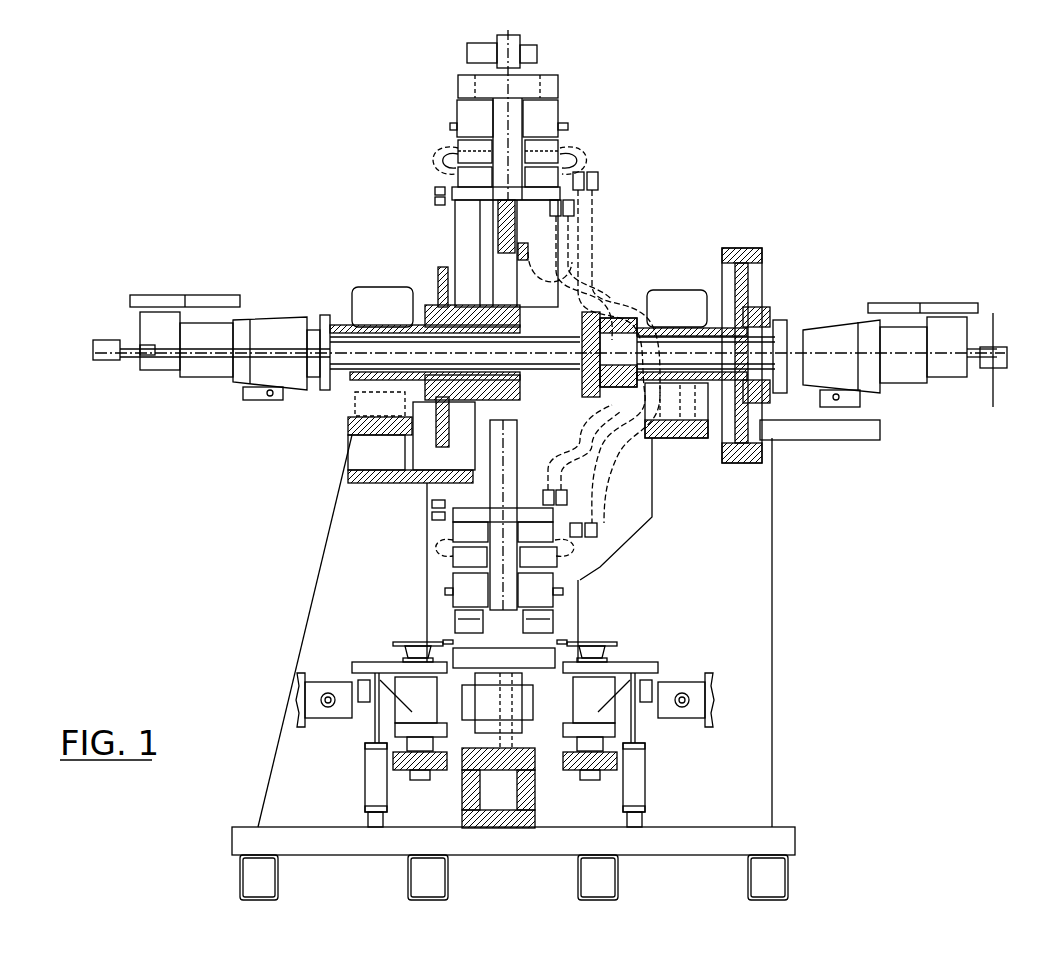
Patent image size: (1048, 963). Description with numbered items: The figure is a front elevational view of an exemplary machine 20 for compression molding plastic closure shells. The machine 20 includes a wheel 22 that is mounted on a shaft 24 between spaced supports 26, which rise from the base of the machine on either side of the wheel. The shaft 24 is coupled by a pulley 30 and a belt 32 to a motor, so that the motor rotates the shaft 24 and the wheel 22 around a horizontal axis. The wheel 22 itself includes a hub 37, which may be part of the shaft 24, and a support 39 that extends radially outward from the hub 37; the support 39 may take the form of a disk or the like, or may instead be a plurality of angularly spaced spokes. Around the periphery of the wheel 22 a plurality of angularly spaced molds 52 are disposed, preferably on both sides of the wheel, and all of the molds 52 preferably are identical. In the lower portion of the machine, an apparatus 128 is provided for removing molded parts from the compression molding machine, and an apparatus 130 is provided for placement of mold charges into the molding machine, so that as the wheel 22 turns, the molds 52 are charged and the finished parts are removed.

The machine 20 is at (698, 180).
The wheel 22 is at (582, 124).
The shaft 24 is at (378, 380).
The supports 26 is at (335, 570).
The pulley 30 is at (766, 340).
The belt 32 is at (745, 250).
The hub 37 is at (480, 310).
The support 39 is at (485, 232).
The molds 52 is at (482, 171).
The apparatus for removing molded parts 128 is at (442, 626).
The apparatus for placement of mold charges 130 is at (376, 643).